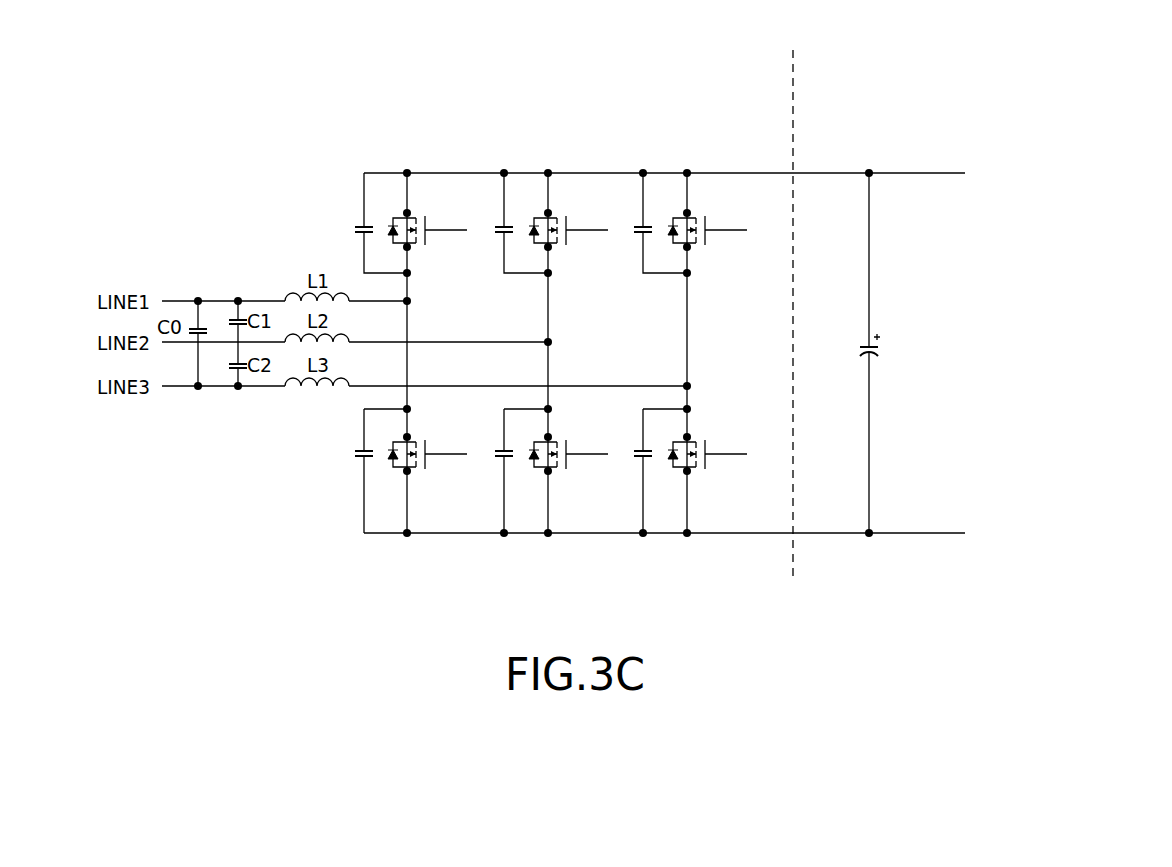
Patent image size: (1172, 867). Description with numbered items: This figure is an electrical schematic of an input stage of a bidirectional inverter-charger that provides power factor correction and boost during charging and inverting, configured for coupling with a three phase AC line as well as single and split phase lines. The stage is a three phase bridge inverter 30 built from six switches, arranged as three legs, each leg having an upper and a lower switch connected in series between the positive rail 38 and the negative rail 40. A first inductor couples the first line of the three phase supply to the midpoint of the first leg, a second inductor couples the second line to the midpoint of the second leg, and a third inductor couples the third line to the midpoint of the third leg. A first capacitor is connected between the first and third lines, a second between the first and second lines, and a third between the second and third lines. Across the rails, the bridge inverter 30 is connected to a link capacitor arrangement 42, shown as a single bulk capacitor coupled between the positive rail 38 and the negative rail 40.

The PFC boost converter / 3E-phase bridge inverter 30 is at (354, 153).
The link capacitor arrangement 42 is at (857, 151).
The positive rail 38 is at (1050, 215).
The negative rail 40 is at (1049, 578).